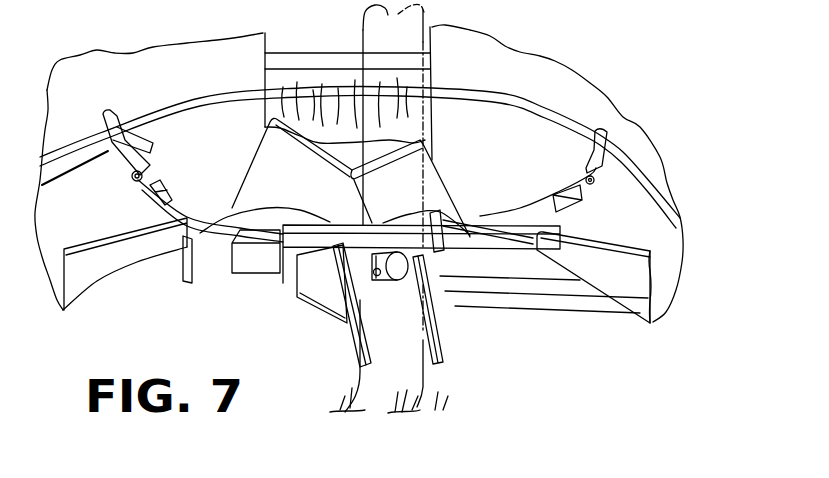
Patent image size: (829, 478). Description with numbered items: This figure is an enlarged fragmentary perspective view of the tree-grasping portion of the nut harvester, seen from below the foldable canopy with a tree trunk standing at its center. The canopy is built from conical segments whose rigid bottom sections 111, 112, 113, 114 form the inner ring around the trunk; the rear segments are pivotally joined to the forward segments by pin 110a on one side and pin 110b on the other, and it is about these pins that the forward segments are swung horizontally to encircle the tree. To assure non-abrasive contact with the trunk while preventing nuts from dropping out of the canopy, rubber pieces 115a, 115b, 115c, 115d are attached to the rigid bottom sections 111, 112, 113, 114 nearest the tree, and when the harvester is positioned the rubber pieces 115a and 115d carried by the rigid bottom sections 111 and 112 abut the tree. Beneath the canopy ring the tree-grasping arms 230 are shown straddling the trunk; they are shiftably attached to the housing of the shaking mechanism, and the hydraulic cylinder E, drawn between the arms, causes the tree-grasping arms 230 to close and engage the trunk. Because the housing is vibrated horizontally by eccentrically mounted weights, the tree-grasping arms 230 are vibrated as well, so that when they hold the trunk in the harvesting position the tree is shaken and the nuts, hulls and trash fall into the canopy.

The rigid bottom section 111 is at (572, 108).
The rigid bottom section 112 is at (188, 88).
The rigid bottom section 113 is at (97, 224).
The rigid bottom section 114 is at (663, 260).
The pin 110a is at (592, 184).
The pin 110b is at (145, 166).
The rubber piece 115a is at (447, 172).
The rubber piece 115b is at (637, 297).
The rubber piece 115c is at (90, 275).
The rubber piece 115d is at (313, 186).
The tree-grasping arms 230 is at (443, 350).
The hydraulic cylinder E is at (407, 282).